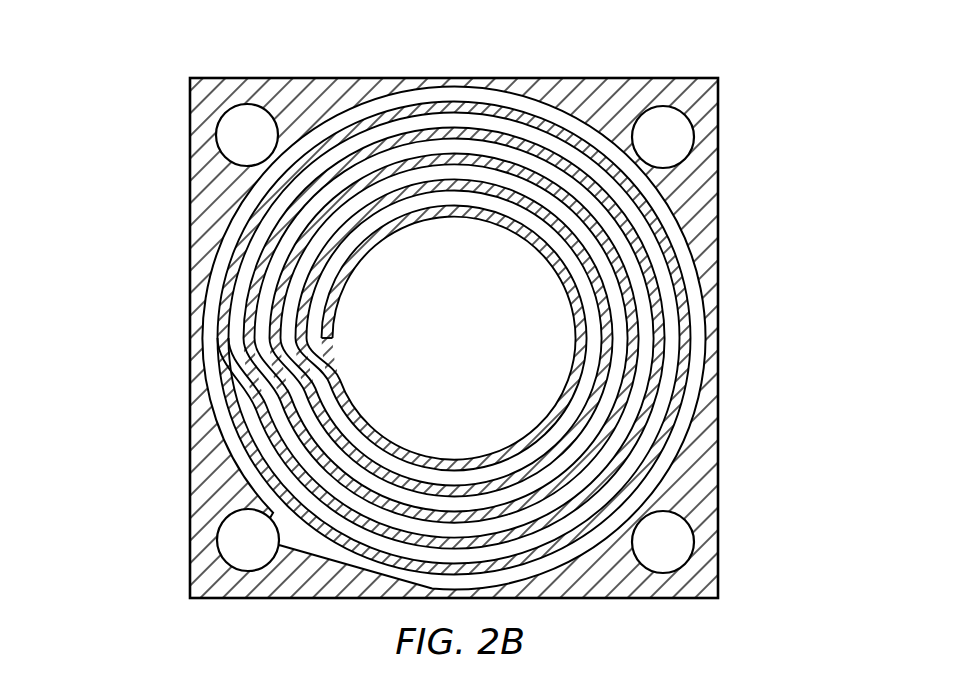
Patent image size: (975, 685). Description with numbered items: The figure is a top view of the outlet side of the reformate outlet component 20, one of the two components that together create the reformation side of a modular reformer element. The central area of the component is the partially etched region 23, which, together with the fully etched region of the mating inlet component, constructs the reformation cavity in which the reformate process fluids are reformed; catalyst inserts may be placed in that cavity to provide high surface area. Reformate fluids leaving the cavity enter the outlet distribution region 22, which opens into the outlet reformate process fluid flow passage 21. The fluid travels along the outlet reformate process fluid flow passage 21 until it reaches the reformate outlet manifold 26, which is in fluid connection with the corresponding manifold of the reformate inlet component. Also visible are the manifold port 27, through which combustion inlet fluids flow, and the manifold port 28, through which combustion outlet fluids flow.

The reformate outlet component 20 is at (125, 181).
The outlet reformate process fluid flow passage 21 is at (232, 231).
The outlet distribution region 22 is at (322, 365).
The partially etched region 23 is at (413, 322).
The reformate outlet manifold 26 is at (235, 545).
The manifold port 27 is at (677, 543).
The manifold port 28 is at (236, 135).